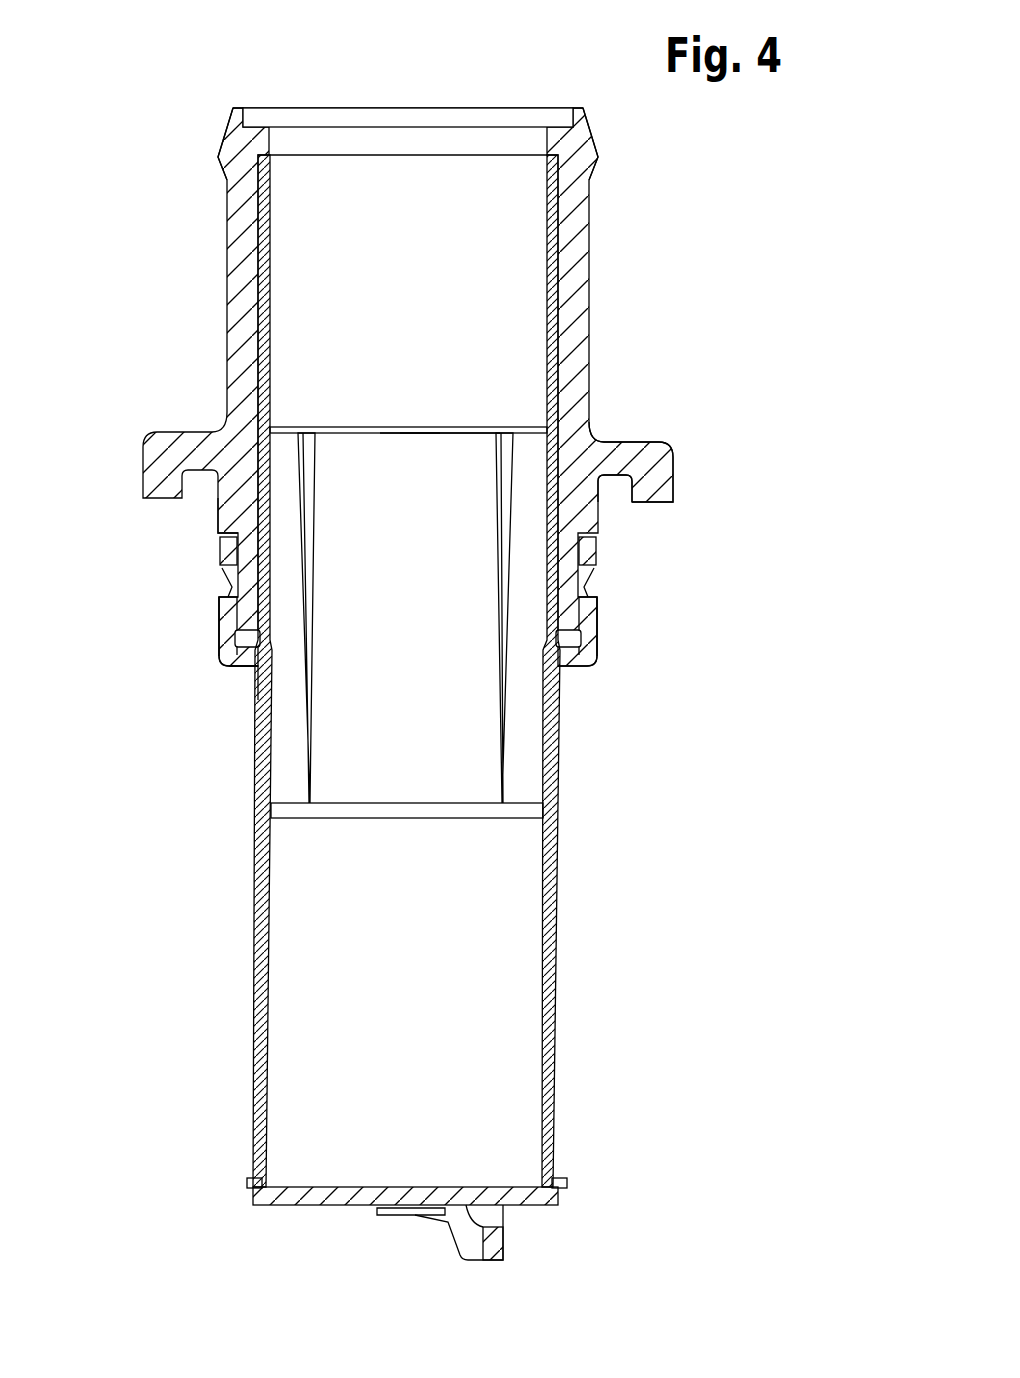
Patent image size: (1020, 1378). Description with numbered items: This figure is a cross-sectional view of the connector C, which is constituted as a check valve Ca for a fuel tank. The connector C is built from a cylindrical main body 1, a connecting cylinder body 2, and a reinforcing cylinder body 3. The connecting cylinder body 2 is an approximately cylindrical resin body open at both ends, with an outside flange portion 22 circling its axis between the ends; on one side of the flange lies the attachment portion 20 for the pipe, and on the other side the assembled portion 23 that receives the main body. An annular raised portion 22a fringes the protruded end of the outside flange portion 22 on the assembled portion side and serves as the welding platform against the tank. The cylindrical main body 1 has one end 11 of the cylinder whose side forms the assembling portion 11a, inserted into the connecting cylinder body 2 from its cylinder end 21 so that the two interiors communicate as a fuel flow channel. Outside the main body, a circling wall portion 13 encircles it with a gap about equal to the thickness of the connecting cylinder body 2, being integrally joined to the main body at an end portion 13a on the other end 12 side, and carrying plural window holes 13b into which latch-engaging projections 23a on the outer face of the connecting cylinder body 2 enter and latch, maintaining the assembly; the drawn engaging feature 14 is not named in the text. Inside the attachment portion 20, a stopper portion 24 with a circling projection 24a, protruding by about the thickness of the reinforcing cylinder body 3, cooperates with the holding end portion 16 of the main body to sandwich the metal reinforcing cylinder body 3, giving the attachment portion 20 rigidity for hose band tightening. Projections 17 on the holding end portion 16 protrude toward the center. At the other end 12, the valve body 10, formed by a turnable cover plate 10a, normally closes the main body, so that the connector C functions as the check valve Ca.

The cylindrical main body 1 is at (561, 810).
The connecting cylinder body 2 is at (416, 380).
The attachment portion 20 is at (584, 300).
The reinforcing cylinder body 3 is at (470, 170).
The valve body 10 is at (405, 1242).
The cover plate 10a is at (360, 1207).
The one end of the cylinder 11 is at (380, 434).
The assembling portion 11a is at (448, 462).
The other end of the cylinder 12 is at (258, 1200).
The circling wall portion 13 is at (216, 655).
The end portion 13a is at (582, 665).
The window holes 13b is at (220, 600).
The engaging recess 14 is at (597, 650).
The holding end portion 16 is at (410, 434).
The projections 17 is at (313, 485).
The cylinder end 21 is at (252, 667).
The outside flange portion 22 is at (673, 470).
The annular raised portion 22a is at (655, 500).
The assembled portion 23 is at (222, 533).
The latch-engaging projections 23a is at (222, 570).
The stopper portion 24 is at (300, 145).
The circling projection 24a is at (375, 128).
The connector C is at (416, 655).
The check valve Ca is at (625, 226).